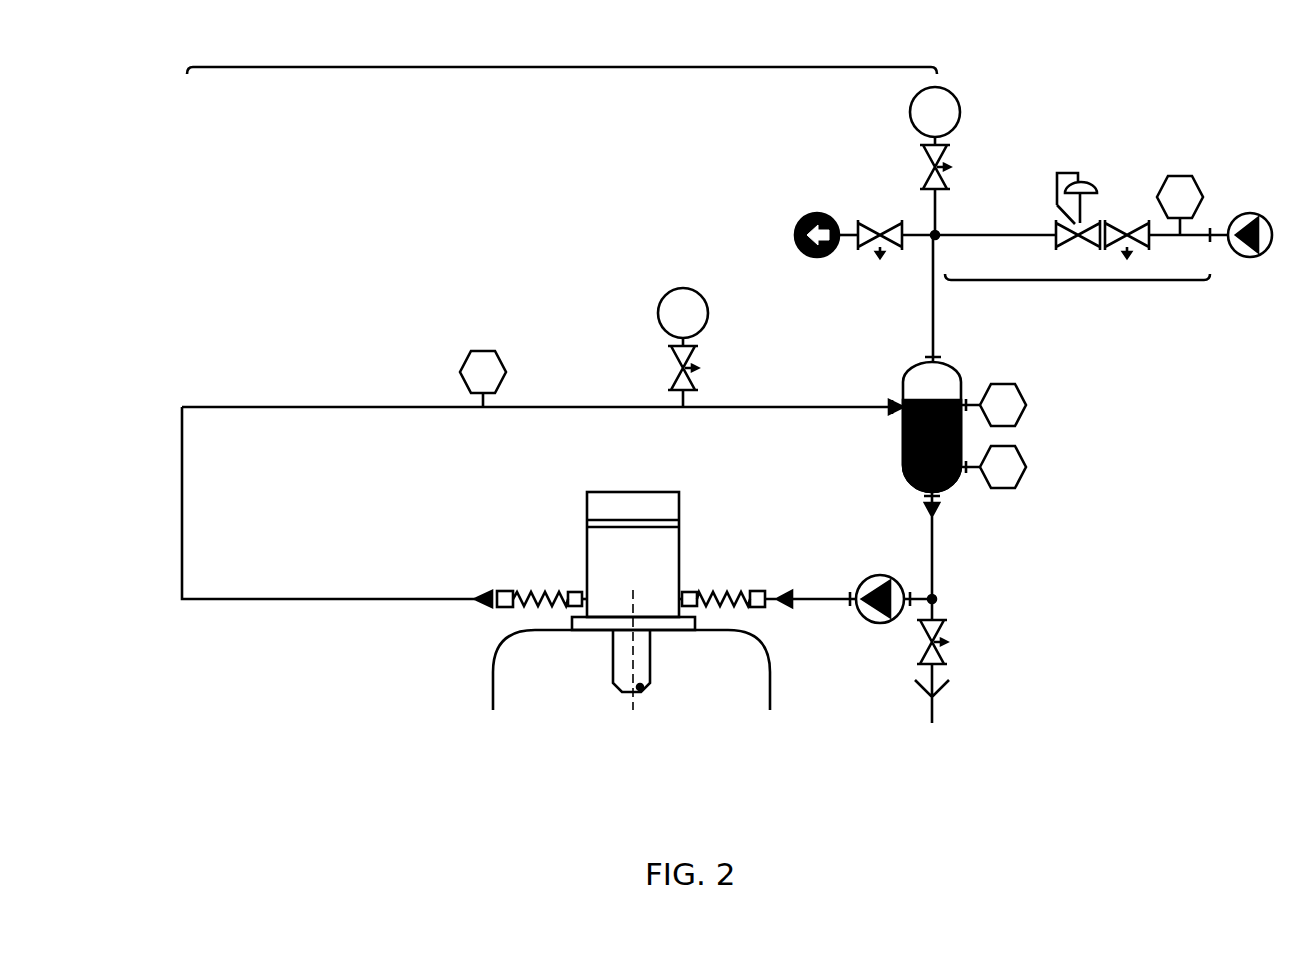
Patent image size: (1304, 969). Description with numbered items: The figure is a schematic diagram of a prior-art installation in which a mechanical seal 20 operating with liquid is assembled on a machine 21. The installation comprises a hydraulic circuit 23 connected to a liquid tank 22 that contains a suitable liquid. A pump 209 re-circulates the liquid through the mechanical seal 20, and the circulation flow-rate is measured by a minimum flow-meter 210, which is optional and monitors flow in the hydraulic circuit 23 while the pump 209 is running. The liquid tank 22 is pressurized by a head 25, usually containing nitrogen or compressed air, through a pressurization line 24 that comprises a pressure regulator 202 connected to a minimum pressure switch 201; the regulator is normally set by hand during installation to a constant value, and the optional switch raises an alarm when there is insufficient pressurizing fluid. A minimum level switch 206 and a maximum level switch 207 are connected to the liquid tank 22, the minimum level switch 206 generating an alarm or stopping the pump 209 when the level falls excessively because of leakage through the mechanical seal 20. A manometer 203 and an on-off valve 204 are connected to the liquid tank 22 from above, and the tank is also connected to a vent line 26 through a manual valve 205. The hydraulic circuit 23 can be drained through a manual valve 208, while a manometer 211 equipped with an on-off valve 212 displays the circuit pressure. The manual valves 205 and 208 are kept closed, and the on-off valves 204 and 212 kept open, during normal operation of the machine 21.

The mechanical seal 20 is at (587, 484).
The machine 21 is at (493, 727).
The liquid tank 22 is at (1097, 358).
The hydraulic circuit 23 is at (572, 67).
The pressurization line 24 is at (1075, 280).
The head 25 is at (1252, 160).
The vent line 26 is at (795, 210).
The minimum pressure switch 201 is at (1182, 160).
The pressure regulator 202 is at (1057, 167).
The manometer 203 is at (961, 88).
The on-off valve 204 is at (973, 190).
The manual valve 205 is at (880, 203).
The minimum level switch 206 is at (1031, 383).
The maximum level switch 207 is at (1031, 445).
The manual valve 208 is at (951, 618).
The pump 209 is at (850, 626).
The minimum flow-meter 210 is at (511, 350).
The manometer 211 is at (732, 368).
The on-off valve 212 is at (720, 376).